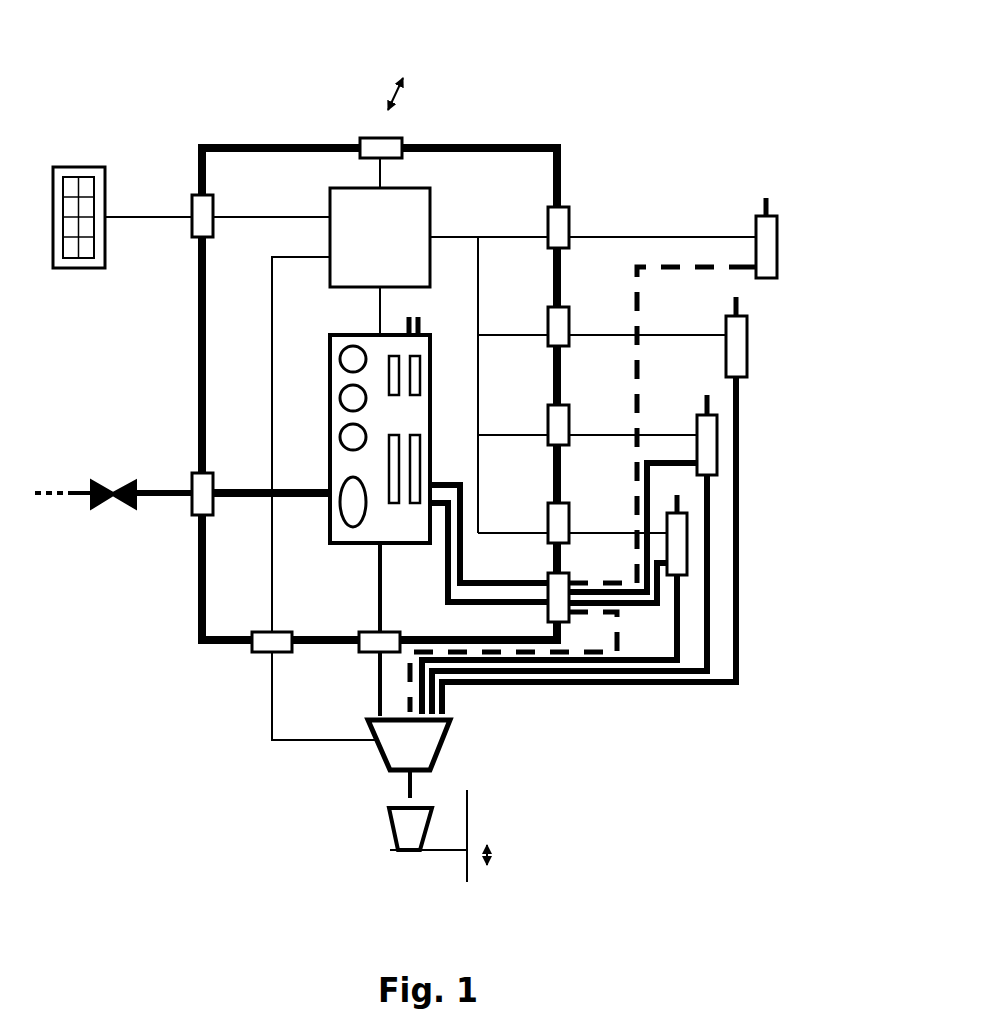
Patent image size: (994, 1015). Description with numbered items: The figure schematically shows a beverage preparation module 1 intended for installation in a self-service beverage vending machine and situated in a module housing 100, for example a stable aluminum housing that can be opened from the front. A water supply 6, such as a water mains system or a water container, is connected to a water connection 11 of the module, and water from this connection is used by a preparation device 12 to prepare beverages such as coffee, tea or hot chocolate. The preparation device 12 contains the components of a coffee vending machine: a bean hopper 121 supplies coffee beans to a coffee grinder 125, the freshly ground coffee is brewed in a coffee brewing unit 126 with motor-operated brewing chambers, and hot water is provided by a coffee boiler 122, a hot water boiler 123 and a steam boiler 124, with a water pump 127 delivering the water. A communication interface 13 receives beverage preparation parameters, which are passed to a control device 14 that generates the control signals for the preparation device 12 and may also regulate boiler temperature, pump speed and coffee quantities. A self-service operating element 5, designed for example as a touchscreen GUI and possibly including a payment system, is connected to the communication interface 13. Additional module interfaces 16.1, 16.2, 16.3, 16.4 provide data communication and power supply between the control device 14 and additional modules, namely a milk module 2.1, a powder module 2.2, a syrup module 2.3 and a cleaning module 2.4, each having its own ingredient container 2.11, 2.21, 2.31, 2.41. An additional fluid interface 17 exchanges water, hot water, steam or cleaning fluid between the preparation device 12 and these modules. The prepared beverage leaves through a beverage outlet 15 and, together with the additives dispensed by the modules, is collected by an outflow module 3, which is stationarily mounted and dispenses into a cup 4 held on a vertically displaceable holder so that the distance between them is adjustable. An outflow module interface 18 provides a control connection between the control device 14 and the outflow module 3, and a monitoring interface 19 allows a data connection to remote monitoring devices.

The beverage preparation module 1 is at (182, 137).
The module housing 100 is at (220, 147).
The self-service operating element 5 is at (73, 157).
The water supply 6 is at (83, 527).
The water connection 11 is at (203, 500).
The preparation device 12 is at (340, 533).
The bean hopper 121 is at (398, 322).
The coffee boiler 122 is at (353, 359).
The hot water boiler 123 is at (353, 398).
The steam boiler 124 is at (353, 437).
The coffee grinder 125 is at (418, 347).
The coffee brewing unit 126 is at (400, 514).
The water pump 127 is at (352, 512).
The communication interface 13 is at (203, 207).
The control device 14 is at (360, 240).
The beverage outlet 15 is at (370, 643).
The additional module interface 16.1 is at (557, 512).
The additional module interface 16.2 is at (557, 413).
The additional module interface 16.3 is at (558, 315).
The additional module interface 16.4 is at (558, 215).
The additional fluid interface 17 is at (557, 584).
The outflow module interface 18 is at (258, 641).
The monitoring interface 19 is at (372, 148).
The milk module 2.1 is at (677, 524).
The powder module 2.2 is at (706, 426).
The syrup module 2.3 is at (735, 326).
The cleaning module 2.4 is at (765, 228).
The ingredient container 2.11 is at (676, 482).
The ingredient container 2.21 is at (706, 383).
The ingredient container 2.31 is at (736, 287).
The ingredient container 2.41 is at (767, 177).
The outflow module 3 is at (400, 740).
The cup 4 is at (390, 828).